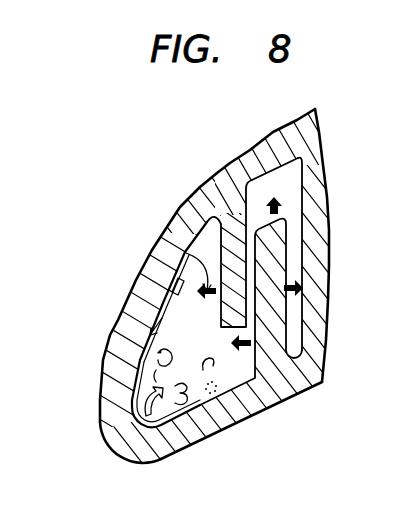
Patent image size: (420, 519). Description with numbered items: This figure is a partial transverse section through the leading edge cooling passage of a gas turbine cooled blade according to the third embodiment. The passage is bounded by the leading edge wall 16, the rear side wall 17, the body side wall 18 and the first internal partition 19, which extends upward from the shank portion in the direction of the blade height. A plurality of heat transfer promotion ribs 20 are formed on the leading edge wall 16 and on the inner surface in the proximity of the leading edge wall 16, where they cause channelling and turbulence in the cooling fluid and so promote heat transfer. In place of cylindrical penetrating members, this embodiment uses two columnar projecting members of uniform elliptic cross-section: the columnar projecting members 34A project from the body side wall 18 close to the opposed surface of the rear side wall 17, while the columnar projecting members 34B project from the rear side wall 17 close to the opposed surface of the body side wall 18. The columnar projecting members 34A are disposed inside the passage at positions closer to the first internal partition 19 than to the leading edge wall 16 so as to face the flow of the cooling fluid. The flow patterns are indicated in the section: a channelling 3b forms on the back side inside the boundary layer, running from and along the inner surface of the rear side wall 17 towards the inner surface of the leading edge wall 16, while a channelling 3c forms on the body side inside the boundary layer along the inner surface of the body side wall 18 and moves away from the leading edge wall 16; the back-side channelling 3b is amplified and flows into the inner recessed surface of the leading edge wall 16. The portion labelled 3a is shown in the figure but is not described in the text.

The coating layer upper portion 3a is at (185, 250).
The channelling on the back side 3b is at (138, 391).
The channelling on the body side 3c is at (205, 398).
The leading edge wall 16 is at (119, 445).
The rear side wall 17 is at (163, 253).
The body side wall 18 is at (228, 412).
The first internal partition 19 is at (317, 234).
The heat transfer promotion ribs 20 is at (148, 348).
The columnar projecting members 34A is at (288, 372).
The columnar projecting members 34B is at (208, 216).